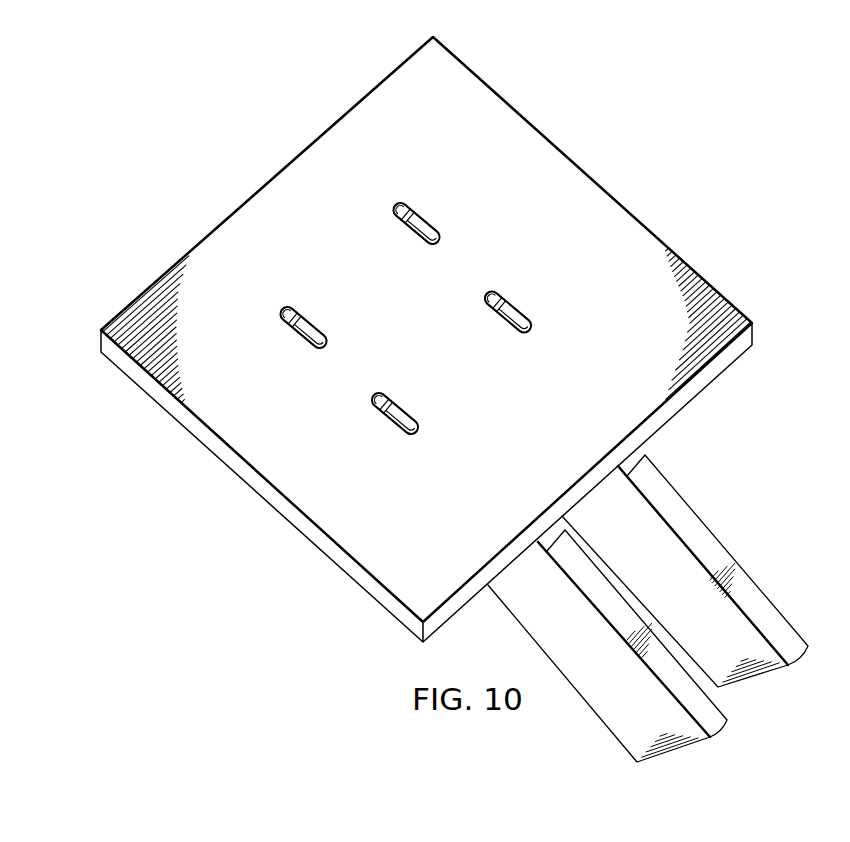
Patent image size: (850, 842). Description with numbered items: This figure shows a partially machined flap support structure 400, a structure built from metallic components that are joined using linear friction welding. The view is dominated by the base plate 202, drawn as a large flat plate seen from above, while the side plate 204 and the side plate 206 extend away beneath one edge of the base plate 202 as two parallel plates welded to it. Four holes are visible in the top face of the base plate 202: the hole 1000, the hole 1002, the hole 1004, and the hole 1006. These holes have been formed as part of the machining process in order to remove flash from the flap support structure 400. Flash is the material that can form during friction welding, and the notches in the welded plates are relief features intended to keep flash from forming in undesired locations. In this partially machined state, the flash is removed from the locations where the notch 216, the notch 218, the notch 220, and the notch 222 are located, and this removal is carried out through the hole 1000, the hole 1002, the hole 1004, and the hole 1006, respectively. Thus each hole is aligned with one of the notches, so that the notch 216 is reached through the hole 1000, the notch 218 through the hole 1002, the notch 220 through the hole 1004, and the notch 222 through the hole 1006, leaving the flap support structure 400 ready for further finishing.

The flap support structure 400 is at (210, 140).
The base plate 202 is at (592, 178).
The side plate 204 is at (797, 657).
The side plate 206 is at (718, 732).
The hole 1000 is at (424, 216).
The hole 1002 is at (517, 303).
The hole 1004 is at (308, 320).
The hole 1006 is at (402, 407).
The notch 216 is at (490, 305).
The notch 218 is at (372, 410).
The notch 220 is at (393, 219).
The notch 222 is at (279, 324).